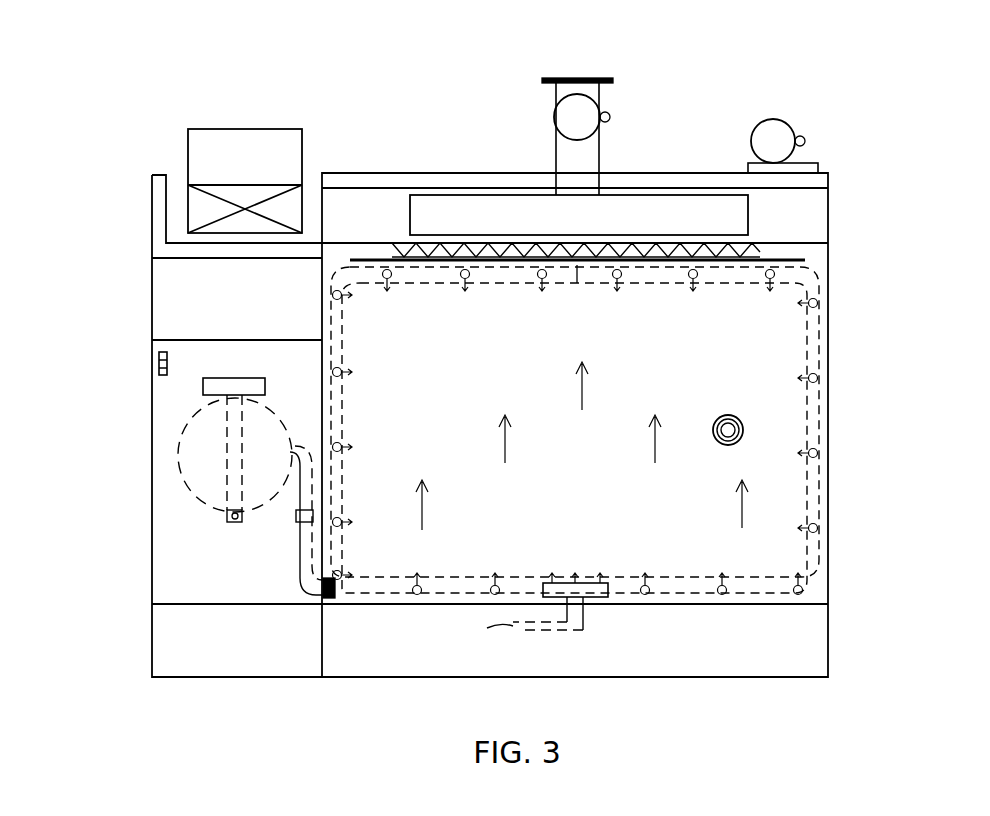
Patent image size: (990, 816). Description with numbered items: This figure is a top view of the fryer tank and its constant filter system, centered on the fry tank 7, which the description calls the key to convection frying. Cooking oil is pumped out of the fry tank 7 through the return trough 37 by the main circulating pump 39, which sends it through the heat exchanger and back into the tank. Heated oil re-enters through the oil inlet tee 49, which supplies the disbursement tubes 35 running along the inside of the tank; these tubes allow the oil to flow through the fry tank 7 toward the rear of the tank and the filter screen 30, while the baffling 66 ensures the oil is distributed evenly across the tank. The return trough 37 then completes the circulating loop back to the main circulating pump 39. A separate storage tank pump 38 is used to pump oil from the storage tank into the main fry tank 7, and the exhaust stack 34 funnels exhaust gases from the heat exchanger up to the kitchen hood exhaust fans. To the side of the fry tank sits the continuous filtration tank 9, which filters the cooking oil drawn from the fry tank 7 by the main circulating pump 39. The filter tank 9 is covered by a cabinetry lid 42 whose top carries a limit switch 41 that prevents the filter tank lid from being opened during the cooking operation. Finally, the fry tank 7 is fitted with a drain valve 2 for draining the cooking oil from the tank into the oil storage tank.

The drain valve 2 is at (743, 440).
The fry tank 7 is at (728, 355).
The continuous filtration tank 9 is at (178, 469).
The filter screen 30 is at (800, 252).
The exhaust stack 34 is at (187, 162).
The disbursement tubes 35 is at (818, 430).
The return trough 37 is at (748, 215).
The storage tank pump 38 is at (803, 137).
The main circulating pump 39 is at (602, 107).
The limit switch 41 is at (159, 365).
The cabinetry lid 42 is at (152, 595).
The oil inlet tee 49 is at (557, 580).
The baffling 66 is at (577, 283).